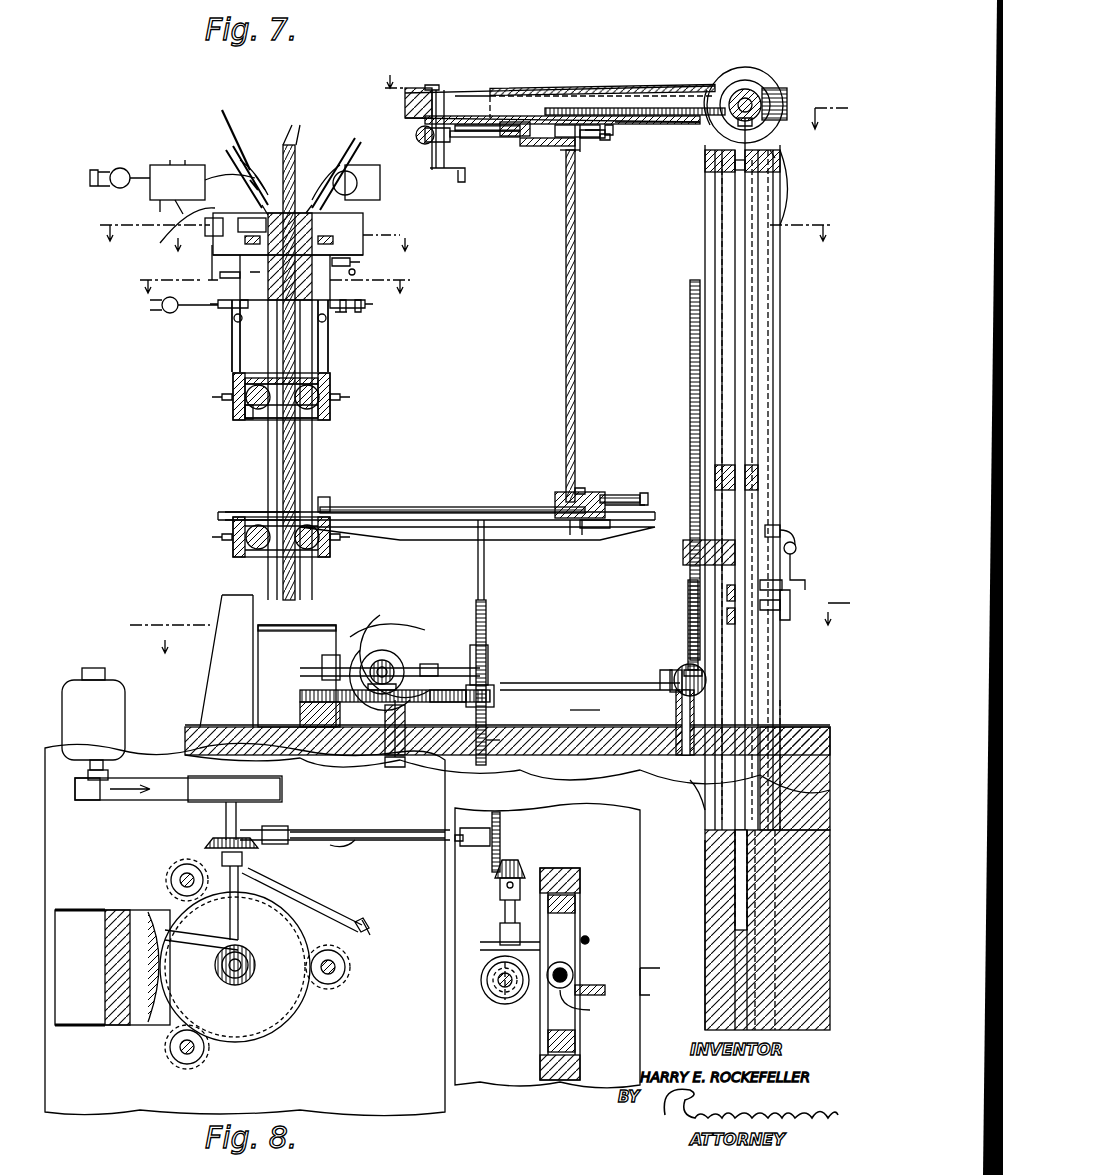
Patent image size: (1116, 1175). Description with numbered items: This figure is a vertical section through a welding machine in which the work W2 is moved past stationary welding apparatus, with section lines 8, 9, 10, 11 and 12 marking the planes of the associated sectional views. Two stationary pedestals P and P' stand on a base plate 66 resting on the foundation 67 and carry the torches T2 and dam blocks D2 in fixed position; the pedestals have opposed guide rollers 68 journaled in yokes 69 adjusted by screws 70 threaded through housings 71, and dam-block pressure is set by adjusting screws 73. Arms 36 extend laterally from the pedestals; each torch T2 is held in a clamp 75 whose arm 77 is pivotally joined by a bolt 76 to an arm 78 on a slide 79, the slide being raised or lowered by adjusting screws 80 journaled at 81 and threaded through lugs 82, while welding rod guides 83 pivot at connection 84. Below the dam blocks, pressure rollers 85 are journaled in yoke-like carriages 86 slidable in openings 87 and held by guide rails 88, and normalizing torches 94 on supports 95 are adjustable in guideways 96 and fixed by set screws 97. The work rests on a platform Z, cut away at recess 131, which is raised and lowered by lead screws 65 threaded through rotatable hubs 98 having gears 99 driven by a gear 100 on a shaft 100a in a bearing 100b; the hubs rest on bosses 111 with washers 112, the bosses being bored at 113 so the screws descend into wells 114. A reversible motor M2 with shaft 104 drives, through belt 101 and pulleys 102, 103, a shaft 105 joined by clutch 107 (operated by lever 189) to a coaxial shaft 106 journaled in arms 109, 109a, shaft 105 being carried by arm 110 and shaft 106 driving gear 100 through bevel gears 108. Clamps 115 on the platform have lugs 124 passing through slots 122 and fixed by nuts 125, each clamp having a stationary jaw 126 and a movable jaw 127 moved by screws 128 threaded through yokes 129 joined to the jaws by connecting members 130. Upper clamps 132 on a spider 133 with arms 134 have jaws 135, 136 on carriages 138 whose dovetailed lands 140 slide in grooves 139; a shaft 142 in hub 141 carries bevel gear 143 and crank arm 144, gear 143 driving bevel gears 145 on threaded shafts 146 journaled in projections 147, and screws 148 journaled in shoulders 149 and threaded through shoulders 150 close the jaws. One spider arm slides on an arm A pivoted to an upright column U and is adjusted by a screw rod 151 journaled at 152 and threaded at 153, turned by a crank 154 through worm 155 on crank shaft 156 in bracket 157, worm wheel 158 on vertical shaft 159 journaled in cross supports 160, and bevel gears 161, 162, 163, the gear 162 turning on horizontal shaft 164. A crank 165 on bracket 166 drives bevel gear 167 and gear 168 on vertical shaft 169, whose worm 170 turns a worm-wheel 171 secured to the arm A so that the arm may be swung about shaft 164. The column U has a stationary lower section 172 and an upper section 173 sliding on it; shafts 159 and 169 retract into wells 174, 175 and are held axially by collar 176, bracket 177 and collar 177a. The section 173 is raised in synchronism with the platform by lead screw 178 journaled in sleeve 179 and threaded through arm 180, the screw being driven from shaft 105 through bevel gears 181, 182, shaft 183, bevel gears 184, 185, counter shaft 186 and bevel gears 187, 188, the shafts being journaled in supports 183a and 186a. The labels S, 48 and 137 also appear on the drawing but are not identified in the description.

In FIG. 7, the section line 8— 8 is at (490, 636).
In FIG. 7, the section line 9— 9 is at (292, 253).
In FIG. 7, the section line 10— 10 is at (275, 291).
In FIG. 7, the section line 11— 11 is at (615, 102).
In FIG. 7, the section line 12— 12 is at (467, 242).
In FIG. 7, the arm 36 is at (400, 233).
In FIG. 7, the torch lead 48 is at (222, 108).
In FIG. 7, the lead screw 65 is at (478, 548).
In FIG. 8, the lead screw 65 is at (185, 882).
In FIG. 7, the base plate 66 is at (205, 726).
In FIG. 8, the base plate 66 is at (368, 985).
In FIG. 7, the foundation 67 is at (828, 726).
In FIG. 7, the guide roller 68 is at (330, 395).
In FIG. 7, the supporting yoke 69 is at (330, 410).
In FIG. 7, the adjusting screw 70 is at (222, 398).
In FIG. 7, the supporting housing 71 is at (248, 416).
In FIG. 7, the adjusting screw 73 is at (245, 240).
In FIG. 7, the clamp 75 is at (195, 165).
In FIG. 7, the bolt 76 is at (261, 163).
In FIG. 7, the arm 77 is at (225, 168).
In FIG. 7, the arm 78 is at (175, 228).
In FIG. 7, the slide 79 is at (212, 262).
In FIG. 7, the adjusting screw 80 is at (215, 272).
In FIG. 7, the journal 81 is at (266, 224).
In FIG. 7, the lug 82 is at (205, 224).
In FIG. 7, the welding rod guide 83 is at (295, 127).
In FIG. 7, the pivotal connection 84 is at (268, 155).
In FIG. 7, the pressure roller 85 is at (372, 262).
In FIG. 7, the yoke-like carriage 86 is at (364, 271).
In FIG. 7, the opening 87 is at (245, 409).
In FIG. 7, the guide rail 88 is at (245, 380).
In FIG. 7, the oxyacetylene torch 94 is at (370, 308).
In FIG. 7, the support 95 is at (325, 325).
In FIG. 7, the guideway 96 is at (330, 365).
In FIG. 7, the set screw 97 is at (345, 320).
In FIG. 7, the rotatable hub 98 is at (322, 680).
In FIG. 7, the gear 99 is at (494, 695).
In FIG. 8, the gear 99 is at (175, 880).
In FIG. 7, the gear 100 is at (372, 730).
In FIG. 8, the gear 100 is at (278, 1030).
In FIG. 7, the shaft 100a is at (395, 760).
In FIG. 8, the shaft 100a is at (238, 975).
In FIG. 7, the bearing 100b is at (405, 762).
In FIG. 7, the belt 101 is at (355, 635).
In FIG. 8, the belt 101 is at (135, 800).
In FIG. 8, the pulley 102 is at (90, 800).
In FIG. 7, the pulley 103 is at (378, 650).
In FIG. 8, the pulley 103 is at (195, 802).
In FIG. 8, the motor shaft 104 is at (108, 775).
In FIG. 7, the shaft 105 is at (389, 739).
In FIG. 8, the shaft 105 is at (245, 830).
In FIG. 7, the second shaft 106 is at (392, 612).
In FIG. 8, the second shaft 106 is at (240, 925).
In FIG. 7, the clutch 107 is at (390, 660).
In FIG. 8, the clutch 107 is at (242, 860).
In FIG. 7, the bevel gears 108 is at (392, 668).
In FIG. 8, the bevel gears 108 is at (255, 958).
In FIG. 8, the arm 109 is at (320, 920).
In FIG. 7, the arm 109a is at (322, 665).
In FIG. 8, the arm 109a is at (185, 948).
In FIG. 8, the supporting arm 110 is at (226, 825).
In FIG. 7, the raised boss 111 is at (490, 707).
In FIG. 7, the washer 112 is at (507, 693).
In FIG. 7, the bore 113 is at (585, 718).
In FIG. 7, the well 114 is at (490, 760).
In FIG. 7, the clamp 115 is at (614, 486).
In FIG. 7, the slot 122 is at (470, 510).
In FIG. 7, the lug 124 is at (585, 535).
In FIG. 7, the nut 125 is at (570, 535).
In FIG. 7, the jaw 126 is at (330, 498).
In FIG. 7, the jaw 127 is at (585, 488).
In FIG. 7, the adjusting screw 128 is at (645, 492).
In FIG. 7, the yoke 129 is at (660, 503).
In FIG. 7, the connecting member 130 is at (615, 528).
In FIG. 7, the recess 131 is at (218, 515).
In FIG. 7, the clamp 132 is at (600, 152).
In FIG. 7, the spider 133 is at (473, 95).
In FIG. 7, the spider arm 134 is at (455, 95).
In FIG. 7, the inner jaw 135 is at (562, 160).
In FIG. 7, the jaw 136 is at (578, 152).
In FIG. 7, the slide 137 is at (560, 148).
In FIG. 7, the slidable carriage 138 is at (515, 150).
In FIG. 7, the dovetailed groove 139 is at (620, 126).
In FIG. 7, the dovetailed land 140 is at (508, 115).
In FIG. 7, the hub 141 is at (425, 88).
In FIG. 7, the shaft 142 is at (421, 130).
In FIG. 7, the beveled gear 143 is at (408, 118).
In FIG. 7, the crank arm 144 is at (455, 185).
In FIG. 7, the bevel gear 145 is at (415, 135).
In FIG. 7, the threaded shaft 146 is at (462, 133).
In FIG. 7, the projection 147 is at (468, 140).
In FIG. 7, the adjusting screw 148 is at (615, 130).
In FIG. 7, the shoulder 149 is at (612, 140).
In FIG. 7, the shoulder 150 is at (545, 138).
In FIG. 7, the screw rod 151 is at (548, 108).
In FIG. 7, the journal 152 is at (708, 85).
In FIG. 7, the threaded engagement 153 is at (598, 92).
In FIG. 7, the crank 154 is at (783, 625).
In FIG. 8, the crank 154 is at (655, 980).
In FIG. 8, the worm 155 is at (590, 1012).
In FIG. 7, the crank shaft 156 is at (775, 640).
In FIG. 8, the crank shaft 156 is at (605, 990).
In FIG. 7, the bracket 157 is at (727, 615).
In FIG. 8, the bracket 157 is at (580, 1038).
In FIG. 7, the worm wheel 158 is at (782, 585).
In FIG. 8, the worm wheel 158 is at (505, 998).
In FIG. 7, the shaft 159 is at (760, 398).
In FIG. 8, the shaft 159 is at (568, 968).
In FIG. 7, the cross support 160 is at (758, 478).
In FIG. 7, the bevel gear 161 is at (752, 112).
In FIG. 7, the bevel gear 162 is at (752, 110).
In FIG. 7, the bevel gear 163 is at (740, 80).
In FIG. 7, the horizontal shaft 164 is at (755, 90).
In FIG. 7, the crank 165 is at (805, 575).
In FIG. 7, the bracket 166 is at (796, 548).
In FIG. 7, the bevel gear 167 is at (795, 535).
In FIG. 7, the gear 168 is at (780, 525).
In FIG. 7, the vertical shaft 169 is at (780, 325).
In FIG. 8, the vertical shaft 169 is at (590, 940).
In FIG. 7, the worm 170 is at (790, 95).
In FIG. 7, the worm-wheel 171 is at (752, 95).
In FIG. 7, the lower section 172 is at (715, 280).
In FIG. 8, the lower section 172 is at (575, 905).
In FIG. 7, the upper section 173 is at (718, 223).
In FIG. 8, the upper section 173 is at (580, 870).
In FIG. 8, the well 174 is at (740, 1000).
In FIG. 7, the well 175 is at (785, 710).
In FIG. 8, the well 175 is at (735, 942).
In FIG. 7, the collar 176 is at (745, 165).
In FIG. 7, the bracket 177 is at (786, 202).
In FIG. 7, the collar 177a is at (792, 162).
In FIG. 7, the lead screw 178 is at (690, 367).
In FIG. 8, the lead screw 178 is at (540, 980).
In FIG. 7, the sleeve 179 is at (676, 700).
In FIG. 7, the arm 180 is at (683, 553).
In FIG. 7, the bevel gear 181 is at (315, 650).
In FIG. 8, the bevel gear 181 is at (210, 848).
In FIG. 7, the bevel gear 182 is at (425, 665).
In FIG. 8, the bevel gear 182 is at (285, 828).
In FIG. 7, the shaft 183 is at (660, 680).
In FIG. 8, the shaft 183 is at (385, 842).
In FIG. 8, the support 183a is at (405, 835).
In FIG. 7, the bevel gear 184 is at (680, 678).
In FIG. 8, the bevel gear 184 is at (500, 820).
In FIG. 8, the bevel gear 185 is at (518, 862).
In FIG. 8, the counter shaft 186 is at (528, 915).
In FIG. 8, the support 186a is at (505, 883).
In FIG. 7, the bevel gear 187 is at (678, 672).
In FIG. 8, the bevel gear 187 is at (500, 932).
In FIG. 7, the bevel gear 188 is at (690, 668).
In FIG. 8, the bevel gear 188 is at (485, 1000).
In FIG. 7, the clutch operating lever 189 is at (490, 655).
In FIG. 8, the clutch operating lever 189 is at (370, 931).
In FIG. 7, the arm A is at (640, 85).
In FIG. 7, the dam block D2 is at (363, 215).
In FIG. 8, the reversible motor M2 is at (93, 719).
In FIG. 7, the pedestal P is at (225, 596).
In FIG. 8, the pedestal P is at (112, 985).
In FIG. 7, the pedestal P' is at (309, 450).
In FIG. 8, the pedestal P' is at (149, 990).
In FIG. 7, the spindle S is at (283, 485).
In FIG. 7, the torch T2 is at (262, 150).
In FIG. 7, the upright column U is at (780, 368).
In FIG. 8, the upright column U is at (580, 880).
In FIG. 7, the work W2 is at (575, 400).
In FIG. 7, the platform Z is at (408, 505).